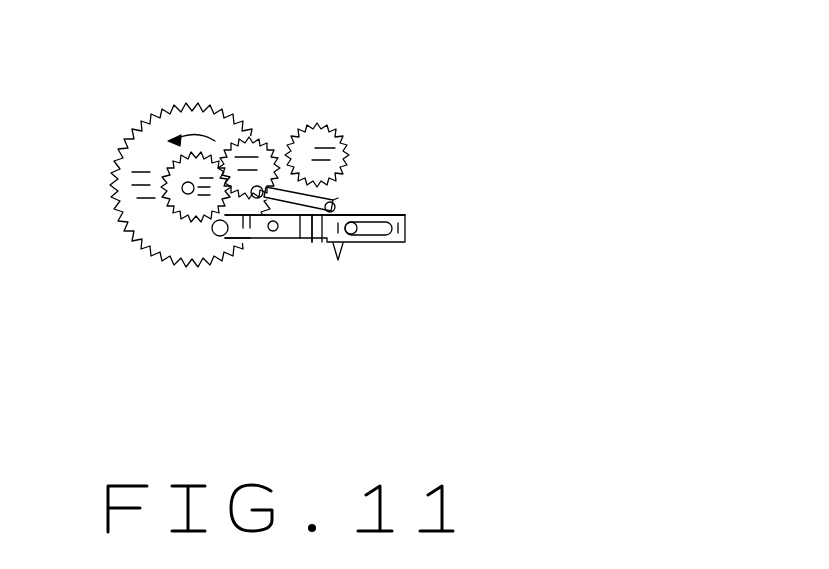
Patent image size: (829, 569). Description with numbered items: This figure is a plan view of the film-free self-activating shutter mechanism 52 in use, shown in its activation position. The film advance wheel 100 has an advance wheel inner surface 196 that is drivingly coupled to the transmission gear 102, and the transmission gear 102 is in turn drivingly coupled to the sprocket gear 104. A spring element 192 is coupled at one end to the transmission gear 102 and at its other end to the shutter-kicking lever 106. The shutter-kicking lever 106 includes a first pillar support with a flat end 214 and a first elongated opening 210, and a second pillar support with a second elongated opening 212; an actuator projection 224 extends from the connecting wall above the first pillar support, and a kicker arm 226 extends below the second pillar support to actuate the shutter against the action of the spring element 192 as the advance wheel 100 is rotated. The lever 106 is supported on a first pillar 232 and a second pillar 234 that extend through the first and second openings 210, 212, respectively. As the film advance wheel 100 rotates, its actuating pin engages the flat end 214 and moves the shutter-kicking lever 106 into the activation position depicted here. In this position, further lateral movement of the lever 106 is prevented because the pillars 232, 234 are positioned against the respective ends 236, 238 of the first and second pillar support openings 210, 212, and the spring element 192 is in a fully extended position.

The film-free self-activating shutter mechanism 52 is at (418, 90).
The film advance wheel 100 is at (153, 143).
The transmission gear 102 is at (245, 150).
The sprocket gear 104 is at (314, 147).
The shutter-kicking lever 106 is at (442, 207).
The spring element 192 is at (338, 198).
The advance wheel inner surface 196 is at (212, 228).
The first elongated opening 210 is at (307, 243).
The second elongated opening 212 is at (404, 243).
The flat end 214 is at (213, 243).
The actuator projection 224 is at (321, 243).
The kicker arm 226 is at (340, 245).
The first pillar 232 is at (273, 232).
The second pillar 234 is at (355, 234).
The end of first pillar support opening 236 is at (266, 198).
The end of second pillar support opening 238 is at (340, 198).